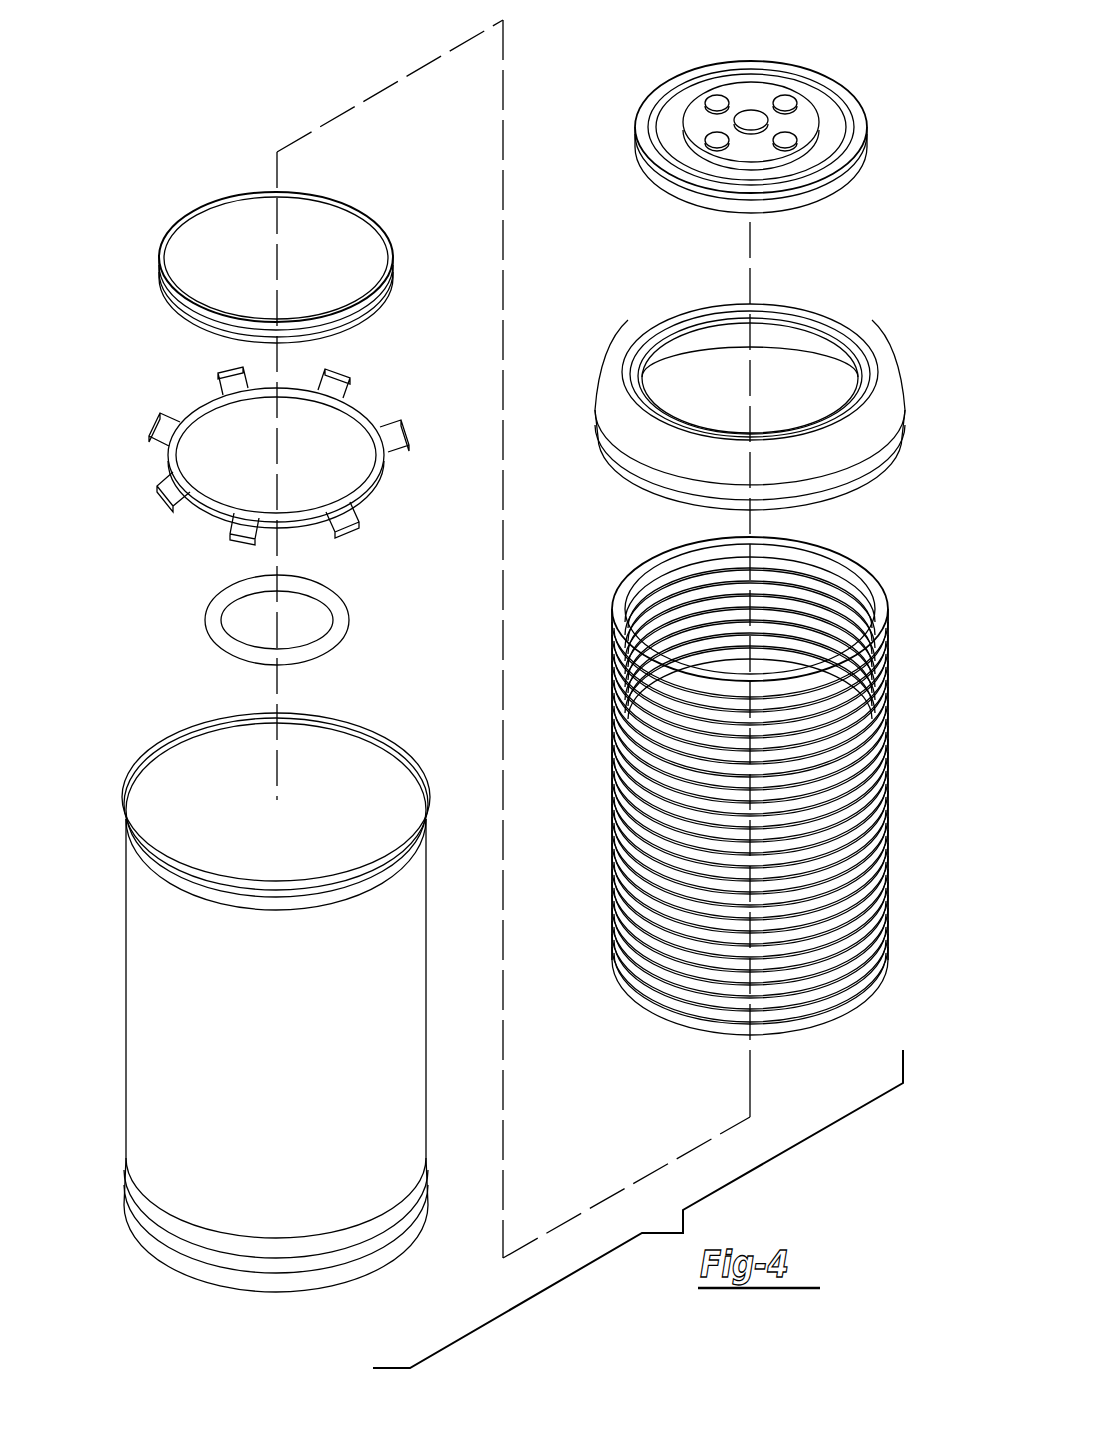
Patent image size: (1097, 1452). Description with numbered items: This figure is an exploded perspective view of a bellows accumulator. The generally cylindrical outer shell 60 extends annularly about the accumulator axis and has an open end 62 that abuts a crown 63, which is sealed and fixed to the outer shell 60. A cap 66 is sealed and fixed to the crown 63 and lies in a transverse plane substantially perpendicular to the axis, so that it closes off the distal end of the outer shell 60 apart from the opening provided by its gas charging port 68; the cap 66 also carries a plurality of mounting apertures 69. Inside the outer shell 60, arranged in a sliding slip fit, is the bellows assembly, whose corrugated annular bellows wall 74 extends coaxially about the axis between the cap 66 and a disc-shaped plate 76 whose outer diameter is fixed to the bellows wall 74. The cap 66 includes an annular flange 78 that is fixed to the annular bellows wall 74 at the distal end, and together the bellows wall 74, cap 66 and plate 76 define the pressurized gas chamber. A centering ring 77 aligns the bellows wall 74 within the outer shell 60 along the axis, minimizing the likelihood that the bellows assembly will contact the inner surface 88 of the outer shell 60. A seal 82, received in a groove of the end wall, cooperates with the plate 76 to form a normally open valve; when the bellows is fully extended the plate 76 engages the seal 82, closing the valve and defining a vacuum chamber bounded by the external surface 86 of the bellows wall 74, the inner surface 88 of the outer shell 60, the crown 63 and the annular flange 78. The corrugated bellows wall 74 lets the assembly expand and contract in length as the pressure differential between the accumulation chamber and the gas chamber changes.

The outer shell 60 is at (242, 954).
The open end 62 is at (263, 795).
The crown 63 is at (747, 404).
The cap 66 is at (746, 124).
The gas charging port 68 is at (751, 67).
The mounting apertures 69 is at (749, 93).
The annular bellows wall 74 is at (782, 786).
The plate 76 is at (276, 242).
The centering ring 77 is at (272, 433).
The annular flange 78 is at (736, 188).
The seal 82 is at (216, 620).
The external surface 86 is at (782, 828).
The inner surface 88 is at (276, 887).